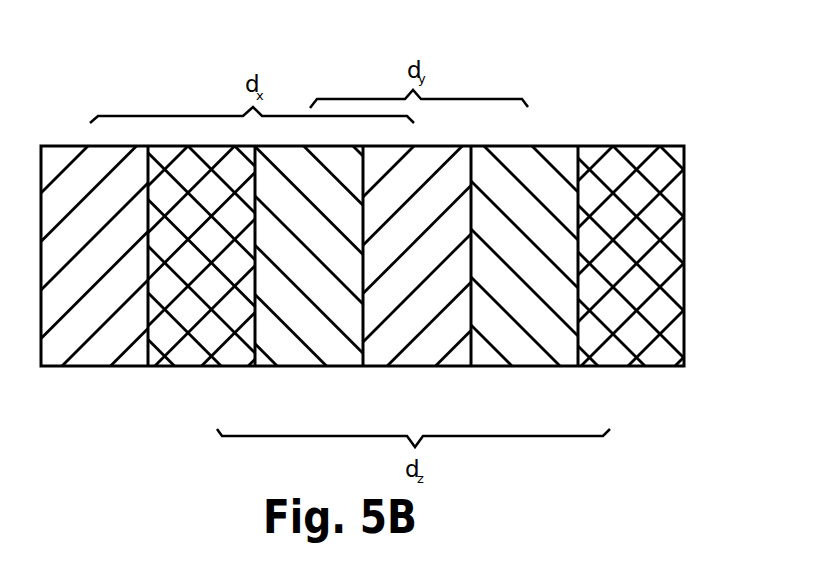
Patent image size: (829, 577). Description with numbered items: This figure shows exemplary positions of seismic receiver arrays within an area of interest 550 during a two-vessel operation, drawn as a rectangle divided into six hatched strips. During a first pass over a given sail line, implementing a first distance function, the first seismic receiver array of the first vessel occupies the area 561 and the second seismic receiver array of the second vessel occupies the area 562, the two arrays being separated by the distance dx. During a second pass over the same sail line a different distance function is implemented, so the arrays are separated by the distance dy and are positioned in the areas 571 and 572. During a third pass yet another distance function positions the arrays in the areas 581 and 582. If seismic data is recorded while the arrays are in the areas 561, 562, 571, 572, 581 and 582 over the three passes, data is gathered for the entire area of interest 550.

The area of interest 550 is at (358, 47).
The area 561 is at (90, 353).
The area 581 is at (192, 353).
The area 571 is at (310, 353).
The area 562 is at (422, 353).
The area 572 is at (527, 353).
The area 582 is at (653, 353).